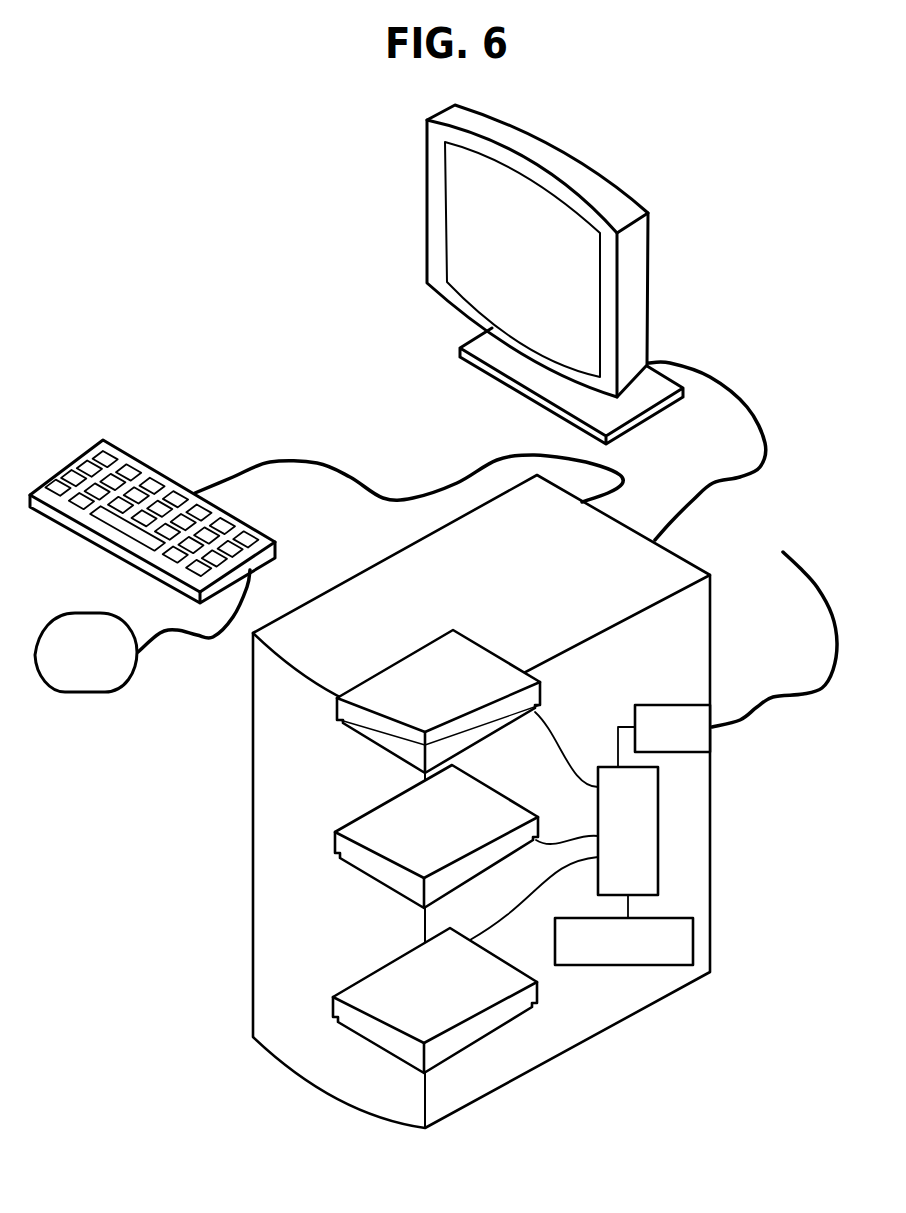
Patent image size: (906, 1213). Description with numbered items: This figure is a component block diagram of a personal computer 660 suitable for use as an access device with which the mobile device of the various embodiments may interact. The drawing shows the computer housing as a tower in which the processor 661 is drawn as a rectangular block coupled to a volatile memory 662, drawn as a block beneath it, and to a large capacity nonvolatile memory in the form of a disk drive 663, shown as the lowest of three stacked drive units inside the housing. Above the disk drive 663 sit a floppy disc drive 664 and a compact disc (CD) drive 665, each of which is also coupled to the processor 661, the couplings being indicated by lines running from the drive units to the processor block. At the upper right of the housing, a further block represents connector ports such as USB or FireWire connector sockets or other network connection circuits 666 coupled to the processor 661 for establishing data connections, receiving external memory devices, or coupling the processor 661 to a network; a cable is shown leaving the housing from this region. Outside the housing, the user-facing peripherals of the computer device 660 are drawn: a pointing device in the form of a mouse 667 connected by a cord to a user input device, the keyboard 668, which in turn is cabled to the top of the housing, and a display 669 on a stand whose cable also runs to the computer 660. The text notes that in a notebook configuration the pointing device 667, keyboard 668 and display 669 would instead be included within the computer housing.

The personal computer 660 is at (712, 600).
The processor 661 is at (628, 831).
The volatile memory 662 is at (624, 941).
The disk drive 663 is at (537, 995).
The floppy disc drive 664 is at (540, 697).
The compact disc (CD) drive 665 is at (487, 869).
The network connection circuits 666 is at (672, 728).
The mouse 667 is at (85, 694).
The keyboard 668 is at (275, 543).
The display 669 is at (648, 290).